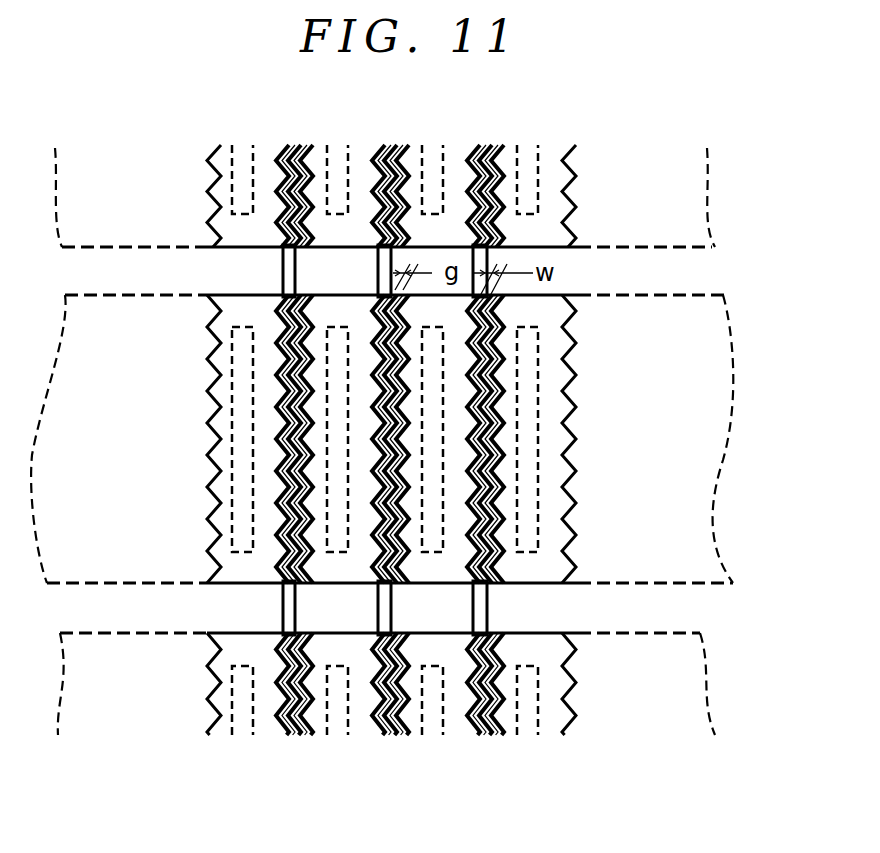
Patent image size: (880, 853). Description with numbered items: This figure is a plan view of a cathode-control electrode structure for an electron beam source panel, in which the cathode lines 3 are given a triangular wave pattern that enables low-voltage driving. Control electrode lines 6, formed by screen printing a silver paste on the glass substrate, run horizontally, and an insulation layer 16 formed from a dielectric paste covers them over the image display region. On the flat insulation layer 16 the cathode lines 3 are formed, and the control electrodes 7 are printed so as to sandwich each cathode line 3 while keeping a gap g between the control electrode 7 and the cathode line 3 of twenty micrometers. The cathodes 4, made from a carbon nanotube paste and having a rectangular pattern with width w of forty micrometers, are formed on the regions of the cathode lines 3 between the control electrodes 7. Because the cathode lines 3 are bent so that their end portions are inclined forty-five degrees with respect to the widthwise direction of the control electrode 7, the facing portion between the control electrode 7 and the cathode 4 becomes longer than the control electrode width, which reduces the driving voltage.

The cathode line 3 is at (480, 608).
The cathode 4 is at (490, 388).
The control electrode line 6 is at (638, 295).
The control electrode 7 is at (268, 414).
The insulation layer 16 is at (260, 607).